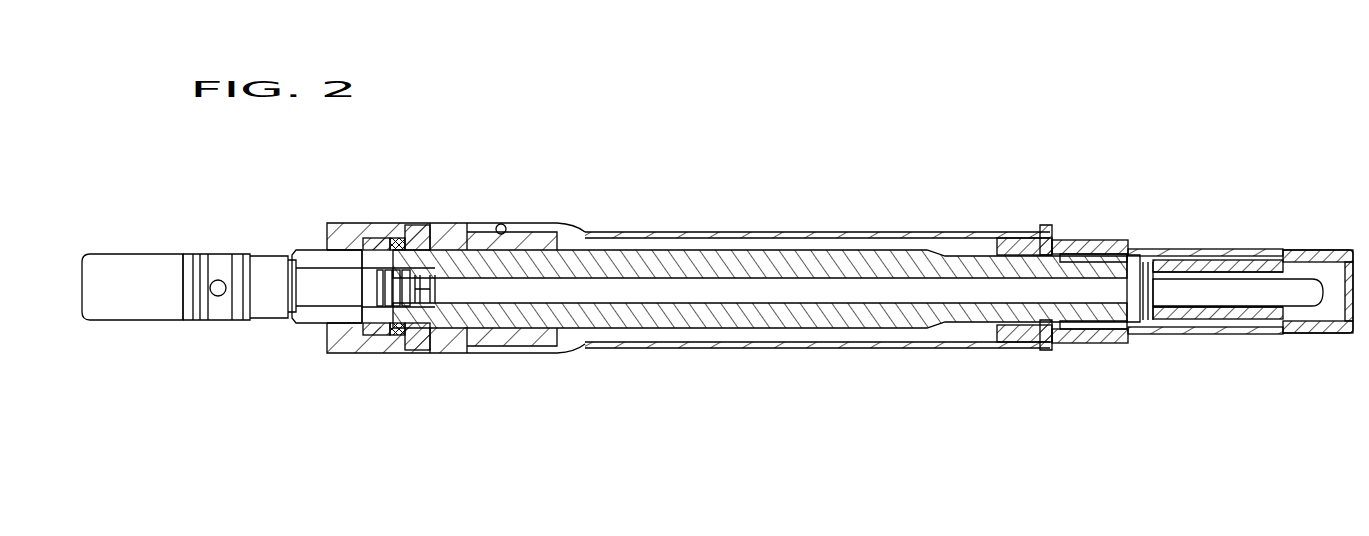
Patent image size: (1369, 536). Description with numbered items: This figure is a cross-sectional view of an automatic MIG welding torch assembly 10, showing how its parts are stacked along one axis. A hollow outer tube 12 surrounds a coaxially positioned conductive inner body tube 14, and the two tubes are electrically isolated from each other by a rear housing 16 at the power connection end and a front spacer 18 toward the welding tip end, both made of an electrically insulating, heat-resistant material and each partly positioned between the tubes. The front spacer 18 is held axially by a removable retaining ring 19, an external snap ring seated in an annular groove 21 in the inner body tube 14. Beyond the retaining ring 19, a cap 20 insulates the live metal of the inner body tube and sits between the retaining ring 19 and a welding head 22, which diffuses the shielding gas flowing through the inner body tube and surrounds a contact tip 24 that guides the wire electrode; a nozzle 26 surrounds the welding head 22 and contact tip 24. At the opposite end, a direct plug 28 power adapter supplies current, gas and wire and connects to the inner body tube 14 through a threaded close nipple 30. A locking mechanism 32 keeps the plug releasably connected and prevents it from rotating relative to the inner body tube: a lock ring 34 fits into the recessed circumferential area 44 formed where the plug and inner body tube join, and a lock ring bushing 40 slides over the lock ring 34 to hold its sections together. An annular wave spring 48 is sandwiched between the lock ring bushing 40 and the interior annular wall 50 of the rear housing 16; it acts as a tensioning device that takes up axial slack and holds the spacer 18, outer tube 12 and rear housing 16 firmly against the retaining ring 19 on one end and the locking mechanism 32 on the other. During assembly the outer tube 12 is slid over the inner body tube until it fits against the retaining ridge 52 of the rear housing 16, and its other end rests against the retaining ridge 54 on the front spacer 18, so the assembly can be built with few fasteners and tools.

The automatic MIG welding torch assembly 10 is at (658, 160).
The outer tube 12 is at (865, 232).
The conductive inner body tube 14 is at (678, 262).
The rear housing 16 is at (327, 224).
The front spacer 18 is at (1043, 352).
The retaining ring 19 is at (1055, 238).
The cap 20 is at (1125, 240).
The annular groove 21 is at (1068, 340).
The welding head 22 is at (1215, 250).
The contact tip 24 is at (1310, 330).
The nozzle 26 is at (1340, 250).
The direct plug 28 is at (262, 320).
The threaded close nipple 30 is at (427, 318).
The locking mechanism 32 is at (345, 242).
The lock ring 34 is at (380, 245).
The lock ring bushing 40 is at (403, 240).
The recessed circumferential area 44 is at (356, 245).
The annular wave spring 48 is at (400, 340).
The interior annular wall 50 is at (416, 340).
The retaining ridge 52 is at (492, 230).
The retaining ridge 54 is at (1015, 350).